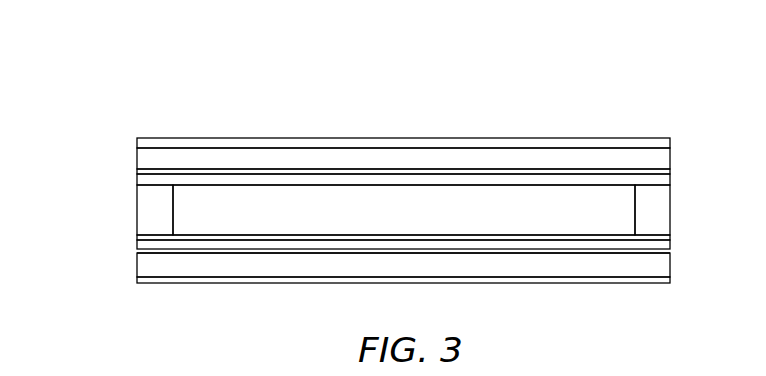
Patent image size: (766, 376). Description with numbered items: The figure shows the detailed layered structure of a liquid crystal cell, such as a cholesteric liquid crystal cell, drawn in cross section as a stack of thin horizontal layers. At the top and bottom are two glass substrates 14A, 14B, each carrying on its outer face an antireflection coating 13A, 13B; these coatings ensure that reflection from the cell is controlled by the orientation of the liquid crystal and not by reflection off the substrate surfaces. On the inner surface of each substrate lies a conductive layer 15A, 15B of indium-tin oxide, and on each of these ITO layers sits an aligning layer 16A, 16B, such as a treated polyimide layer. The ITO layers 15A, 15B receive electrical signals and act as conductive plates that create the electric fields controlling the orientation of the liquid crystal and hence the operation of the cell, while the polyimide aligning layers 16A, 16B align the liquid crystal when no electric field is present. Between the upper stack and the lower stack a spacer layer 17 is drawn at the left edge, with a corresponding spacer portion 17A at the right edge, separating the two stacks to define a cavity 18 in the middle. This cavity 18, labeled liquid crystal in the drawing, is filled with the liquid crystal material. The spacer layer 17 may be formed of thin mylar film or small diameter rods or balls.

The antireflection coating 13A is at (445, 120).
The glass substrate 14A is at (445, 146).
The conductive layer 15A is at (445, 166).
The aligning layer 16A is at (445, 191).
The spacer layer 17 is at (118, 207).
The spacer / seal 17A is at (694, 210).
The cavity 18 is at (260, 222).
The aligning layer 16B is at (358, 236).
The conductive layer 15B is at (358, 260).
The glass substrate 14B is at (358, 284).
The antireflection coating 13B is at (441, 302).